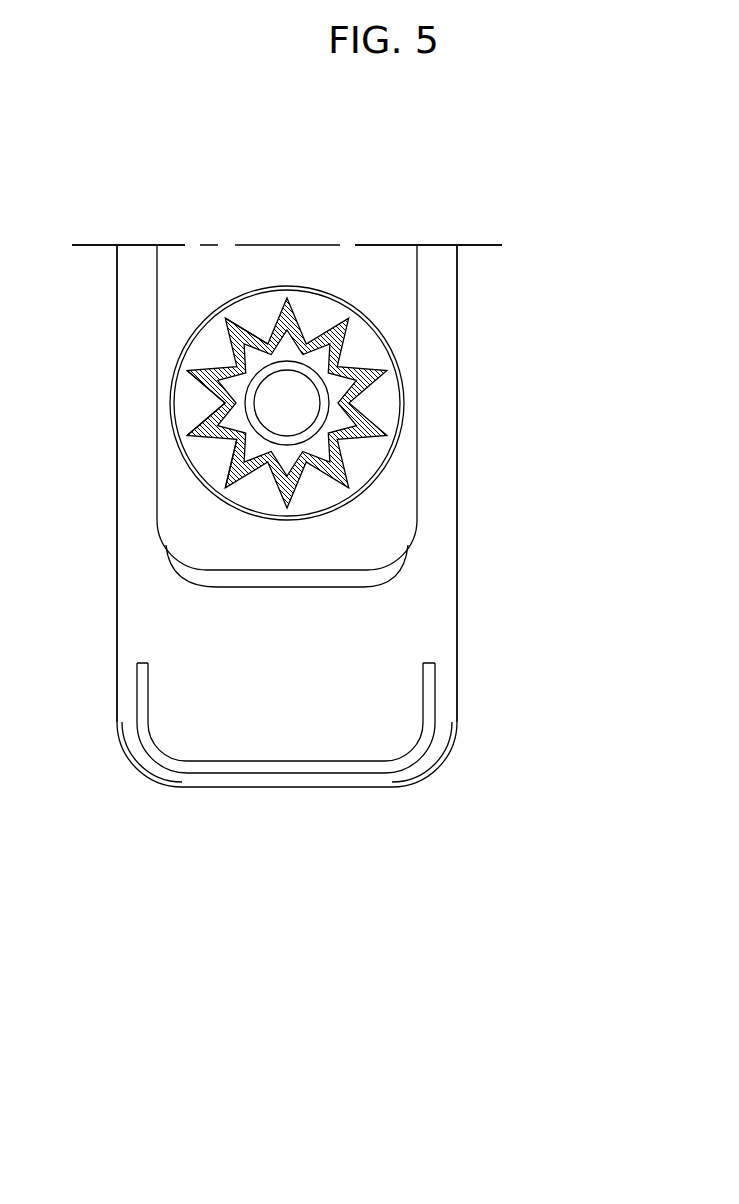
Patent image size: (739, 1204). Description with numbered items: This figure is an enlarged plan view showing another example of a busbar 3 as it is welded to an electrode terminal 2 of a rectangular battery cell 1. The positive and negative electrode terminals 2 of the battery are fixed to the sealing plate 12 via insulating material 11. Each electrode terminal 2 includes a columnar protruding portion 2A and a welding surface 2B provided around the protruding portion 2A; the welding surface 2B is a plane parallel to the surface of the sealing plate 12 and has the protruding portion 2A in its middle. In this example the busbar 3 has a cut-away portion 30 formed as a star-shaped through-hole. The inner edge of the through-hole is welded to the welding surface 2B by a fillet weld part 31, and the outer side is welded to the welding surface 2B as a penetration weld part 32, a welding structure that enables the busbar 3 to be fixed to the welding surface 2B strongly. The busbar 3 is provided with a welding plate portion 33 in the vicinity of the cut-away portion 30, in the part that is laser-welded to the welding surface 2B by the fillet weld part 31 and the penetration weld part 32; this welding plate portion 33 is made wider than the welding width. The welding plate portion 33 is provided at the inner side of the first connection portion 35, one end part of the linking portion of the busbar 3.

The battery cell 1 is at (350, 615).
The electrode terminal 2 is at (330, 405).
The protruding portion 2A is at (340, 348).
The welding surface 2B is at (340, 414).
The busbar 3 is at (450, 492).
The insulating material 11 is at (285, 580).
The sealing plate 12 is at (420, 612).
The cut-away portion 30 is at (327, 297).
The fillet weld part 31 is at (203, 403).
The penetration weld part 32 is at (220, 462).
The welding plate portion 33 is at (203, 348).
The first connection portion 35 is at (212, 275).